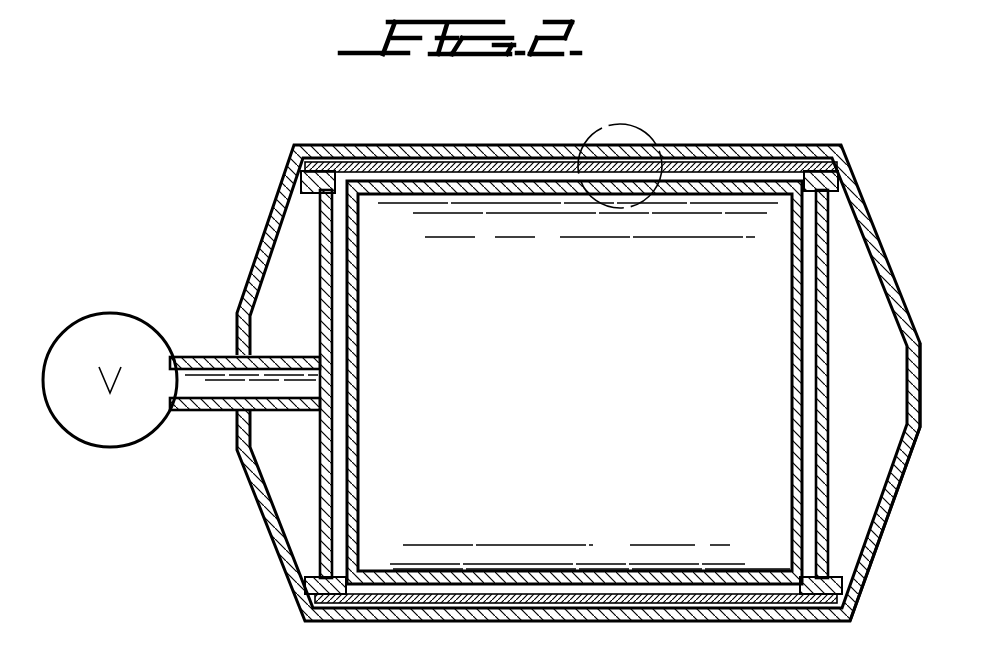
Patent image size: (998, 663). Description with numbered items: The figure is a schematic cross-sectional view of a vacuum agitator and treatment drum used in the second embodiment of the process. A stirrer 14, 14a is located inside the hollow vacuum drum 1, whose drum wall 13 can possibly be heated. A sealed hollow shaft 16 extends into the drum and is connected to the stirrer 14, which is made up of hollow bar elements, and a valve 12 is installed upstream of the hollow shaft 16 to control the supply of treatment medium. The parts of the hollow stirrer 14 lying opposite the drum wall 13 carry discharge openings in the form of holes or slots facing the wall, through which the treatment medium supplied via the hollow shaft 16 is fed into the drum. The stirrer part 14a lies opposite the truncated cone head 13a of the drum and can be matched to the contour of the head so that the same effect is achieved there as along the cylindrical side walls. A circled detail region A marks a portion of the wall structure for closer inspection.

The liquid container / inner vessel 1 is at (580, 389).
The valve 12 is at (118, 313).
The outer shell 13 is at (440, 119).
The outer shell side wall 13a is at (908, 466).
The insulating layer 14 is at (477, 161).
The inner wall 14a is at (829, 384).
The pipe 16 is at (198, 355).
The detail region A is at (630, 125).